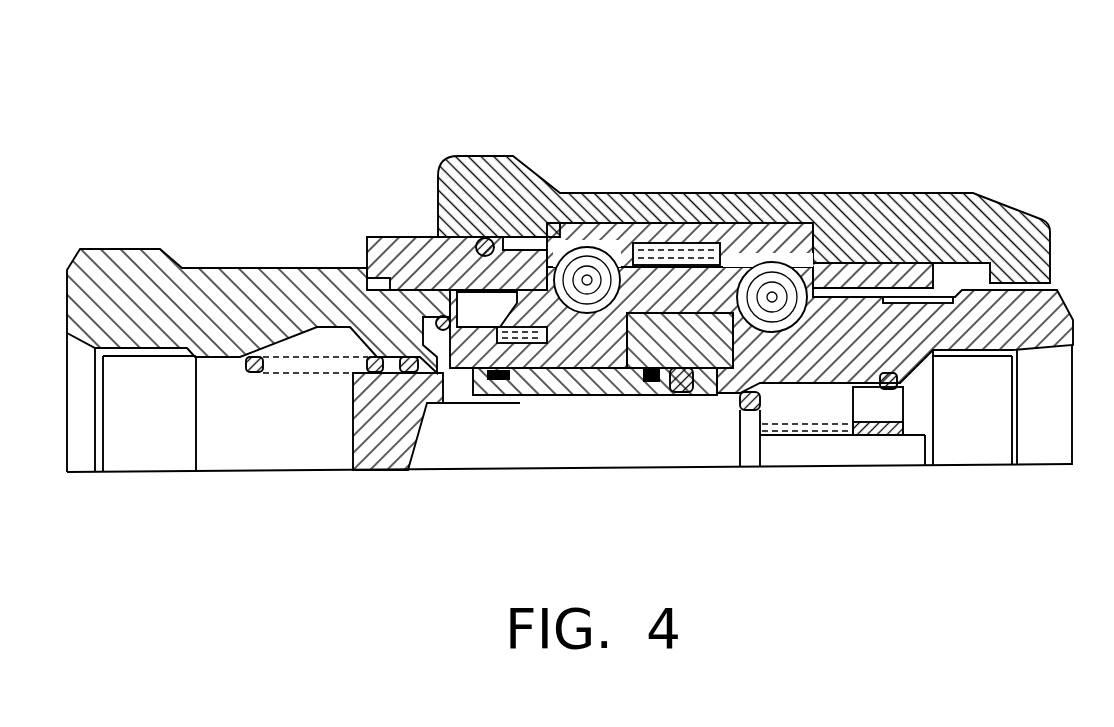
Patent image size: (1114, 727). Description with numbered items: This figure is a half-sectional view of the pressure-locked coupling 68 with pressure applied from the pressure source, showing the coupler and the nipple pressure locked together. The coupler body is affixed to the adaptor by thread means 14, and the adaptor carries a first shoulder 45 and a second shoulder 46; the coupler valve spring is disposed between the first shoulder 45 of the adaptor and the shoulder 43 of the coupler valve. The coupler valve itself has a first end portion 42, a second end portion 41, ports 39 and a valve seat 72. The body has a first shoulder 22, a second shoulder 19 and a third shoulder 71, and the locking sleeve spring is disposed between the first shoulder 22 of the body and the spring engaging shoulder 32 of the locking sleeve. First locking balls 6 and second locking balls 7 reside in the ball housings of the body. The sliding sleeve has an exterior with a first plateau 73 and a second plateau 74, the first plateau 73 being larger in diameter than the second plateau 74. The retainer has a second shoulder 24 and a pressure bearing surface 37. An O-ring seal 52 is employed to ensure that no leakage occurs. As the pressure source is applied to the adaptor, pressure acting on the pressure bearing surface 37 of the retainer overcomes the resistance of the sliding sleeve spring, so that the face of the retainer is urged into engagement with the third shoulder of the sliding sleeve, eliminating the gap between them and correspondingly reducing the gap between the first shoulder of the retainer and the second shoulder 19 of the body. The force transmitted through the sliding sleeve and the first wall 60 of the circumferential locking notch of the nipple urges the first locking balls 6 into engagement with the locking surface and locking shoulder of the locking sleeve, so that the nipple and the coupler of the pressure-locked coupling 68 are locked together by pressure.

The first locking balls 6 is at (857, 295).
The second locking balls 7 is at (592, 278).
The thread means 14 is at (402, 277).
The second shoulder 19 is at (542, 252).
The first shoulder 22 is at (744, 226).
The second shoulder 24 is at (452, 236).
The spring engaging shoulder 32 is at (775, 297).
The pressure bearing surface 37 is at (510, 398).
The ports 39 is at (470, 398).
The second end portion 41 is at (688, 398).
The first end portion 42 is at (355, 378).
The shoulder 43 is at (368, 357).
The first shoulder 45 is at (245, 357).
The second shoulder 46 is at (458, 292).
The O-ring seal 52 is at (487, 240).
The first wall 60 is at (892, 266).
The pressure-locked coupling 68 is at (670, 163).
The third shoulder 71 is at (652, 313).
The valve seat 72 is at (437, 368).
The first plateau 73 is at (626, 235).
The second plateau 74 is at (612, 290).